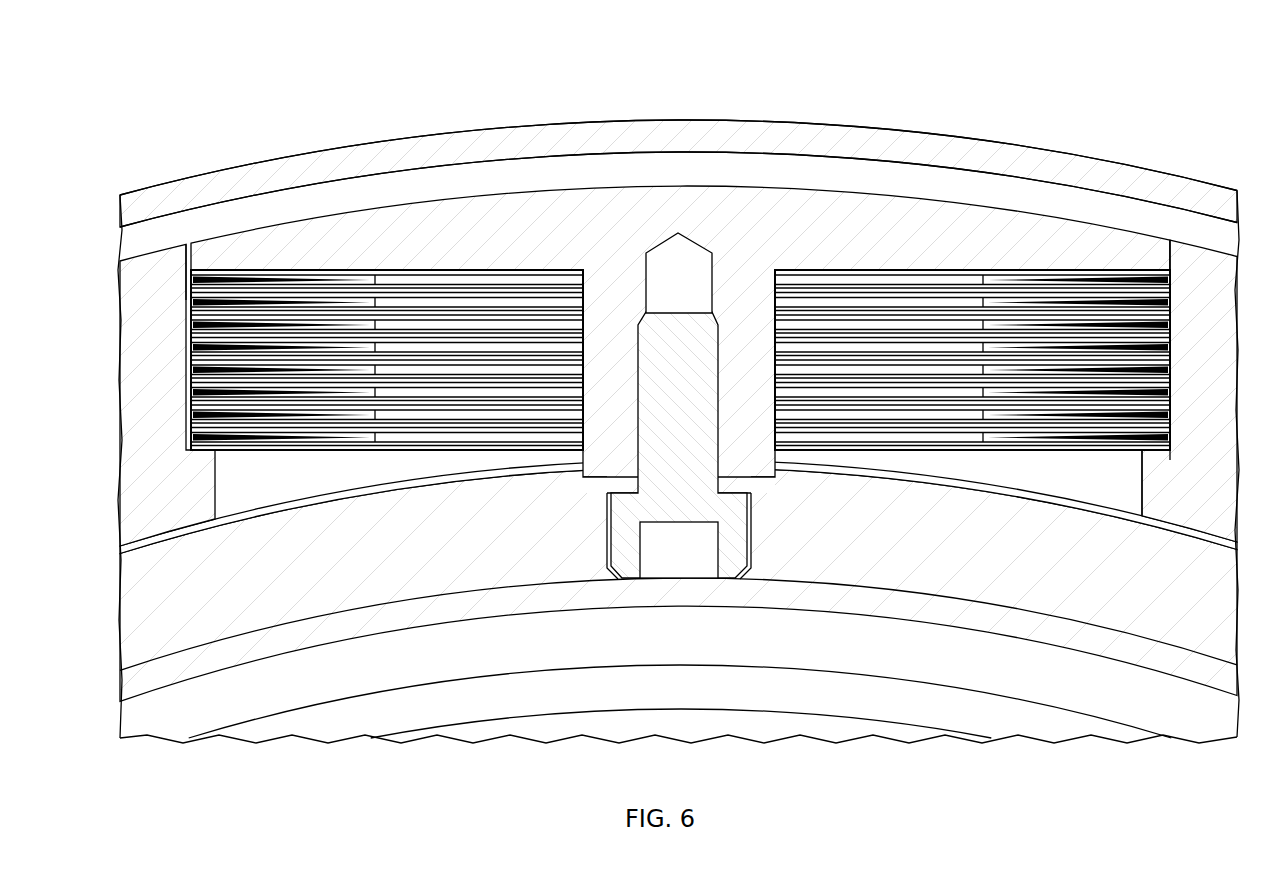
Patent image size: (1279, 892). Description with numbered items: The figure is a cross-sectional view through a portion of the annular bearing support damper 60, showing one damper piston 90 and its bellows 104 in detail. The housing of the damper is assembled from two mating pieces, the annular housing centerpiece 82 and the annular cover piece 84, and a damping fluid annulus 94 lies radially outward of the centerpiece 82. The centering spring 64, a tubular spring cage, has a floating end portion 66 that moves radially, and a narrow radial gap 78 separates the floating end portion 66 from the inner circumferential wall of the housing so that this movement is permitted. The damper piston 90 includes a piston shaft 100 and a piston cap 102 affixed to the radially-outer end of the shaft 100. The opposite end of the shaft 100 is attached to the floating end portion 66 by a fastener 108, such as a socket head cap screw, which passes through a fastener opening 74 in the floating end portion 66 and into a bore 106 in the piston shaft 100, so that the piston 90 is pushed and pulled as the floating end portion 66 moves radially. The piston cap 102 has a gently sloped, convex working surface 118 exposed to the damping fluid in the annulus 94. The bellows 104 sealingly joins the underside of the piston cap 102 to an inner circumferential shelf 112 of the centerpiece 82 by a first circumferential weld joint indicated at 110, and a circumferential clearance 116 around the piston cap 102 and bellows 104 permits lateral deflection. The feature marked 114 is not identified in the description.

The annular bearing support damper 60 is at (133, 158).
The centering spring 64 is at (172, 724).
The floating end portion 66 is at (128, 600).
The fastener openings 74 is at (752, 515).
The radial gap 78 is at (312, 498).
The annular housing centerpiece 82 is at (130, 467).
The annular cover piece 84 is at (972, 148).
The damper piston 90 is at (433, 212).
The damping fluid annulus 94 is at (273, 197).
The piston shaft 100 is at (598, 475).
The piston cap 102 is at (842, 215).
The bellows 104 is at (193, 352).
The bore 106 is at (690, 272).
The fastener 108 is at (690, 410).
The first circumferential weld joint 110 is at (1160, 450).
The inner circumferential shelf 112 is at (1142, 455).
The gap 114 is at (1163, 268).
The circumferential clearance 116 is at (188, 262).
The working surface 118 is at (682, 186).